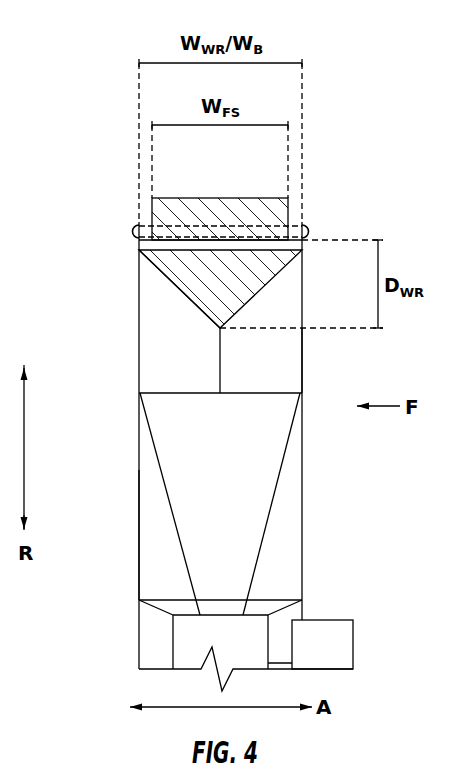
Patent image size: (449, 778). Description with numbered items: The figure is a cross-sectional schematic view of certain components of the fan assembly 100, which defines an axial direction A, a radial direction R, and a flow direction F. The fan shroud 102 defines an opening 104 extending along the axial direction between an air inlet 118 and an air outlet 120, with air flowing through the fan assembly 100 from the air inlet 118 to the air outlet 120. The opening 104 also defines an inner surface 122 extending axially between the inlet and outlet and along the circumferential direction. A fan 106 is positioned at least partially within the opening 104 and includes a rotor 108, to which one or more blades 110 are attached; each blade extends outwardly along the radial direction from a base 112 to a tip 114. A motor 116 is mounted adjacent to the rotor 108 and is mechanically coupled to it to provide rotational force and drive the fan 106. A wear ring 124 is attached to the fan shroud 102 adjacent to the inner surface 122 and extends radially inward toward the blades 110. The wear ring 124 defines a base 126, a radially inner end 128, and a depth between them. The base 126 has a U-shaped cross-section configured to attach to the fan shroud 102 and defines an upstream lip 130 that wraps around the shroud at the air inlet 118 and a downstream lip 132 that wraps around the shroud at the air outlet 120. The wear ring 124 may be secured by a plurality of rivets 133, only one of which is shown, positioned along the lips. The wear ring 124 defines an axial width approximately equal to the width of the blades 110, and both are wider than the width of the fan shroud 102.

The fan assembly 100 is at (70, 156).
The fan shroud 102 is at (163, 216).
The opening 104 is at (167, 344).
The fan 106 is at (120, 536).
The rotor 108 is at (187, 640).
The blades 110 is at (193, 537).
The base 112 is at (223, 608).
The tip 114 is at (265, 405).
The motor 116 is at (333, 636).
The air inlet 118 is at (295, 352).
The air outlet 120 is at (145, 472).
The inner surface 122 is at (205, 288).
The wear ring 124 is at (190, 240).
The base 126 is at (142, 252).
The radially inner end 128 is at (212, 328).
The upstream lip 130 is at (294, 222).
The downstream lip 132 is at (137, 217).
The rivets 133 is at (213, 228).